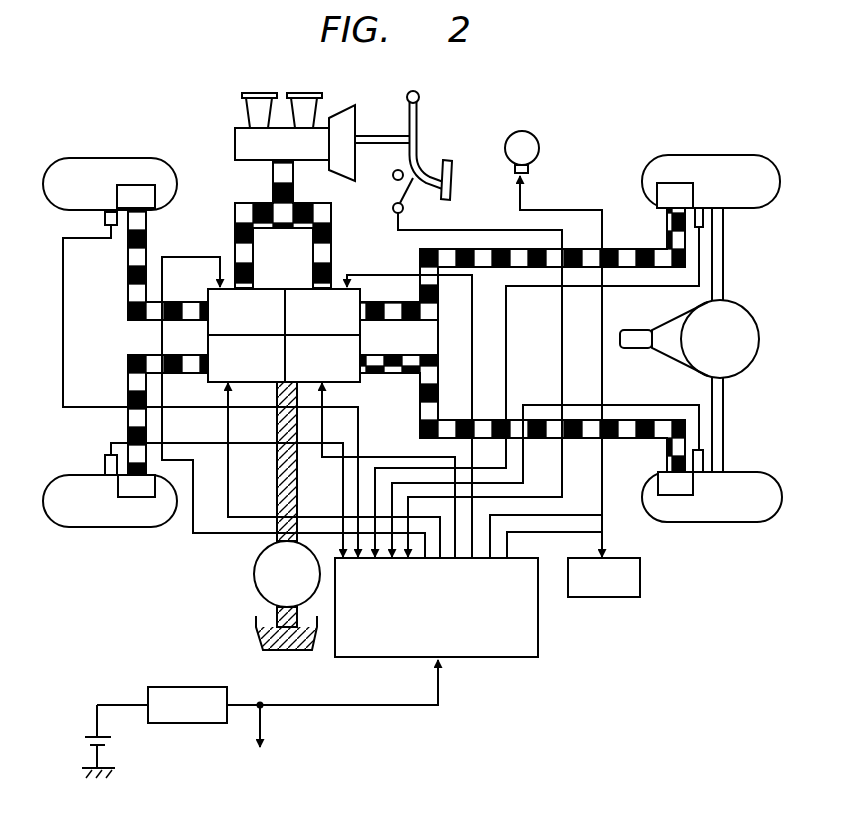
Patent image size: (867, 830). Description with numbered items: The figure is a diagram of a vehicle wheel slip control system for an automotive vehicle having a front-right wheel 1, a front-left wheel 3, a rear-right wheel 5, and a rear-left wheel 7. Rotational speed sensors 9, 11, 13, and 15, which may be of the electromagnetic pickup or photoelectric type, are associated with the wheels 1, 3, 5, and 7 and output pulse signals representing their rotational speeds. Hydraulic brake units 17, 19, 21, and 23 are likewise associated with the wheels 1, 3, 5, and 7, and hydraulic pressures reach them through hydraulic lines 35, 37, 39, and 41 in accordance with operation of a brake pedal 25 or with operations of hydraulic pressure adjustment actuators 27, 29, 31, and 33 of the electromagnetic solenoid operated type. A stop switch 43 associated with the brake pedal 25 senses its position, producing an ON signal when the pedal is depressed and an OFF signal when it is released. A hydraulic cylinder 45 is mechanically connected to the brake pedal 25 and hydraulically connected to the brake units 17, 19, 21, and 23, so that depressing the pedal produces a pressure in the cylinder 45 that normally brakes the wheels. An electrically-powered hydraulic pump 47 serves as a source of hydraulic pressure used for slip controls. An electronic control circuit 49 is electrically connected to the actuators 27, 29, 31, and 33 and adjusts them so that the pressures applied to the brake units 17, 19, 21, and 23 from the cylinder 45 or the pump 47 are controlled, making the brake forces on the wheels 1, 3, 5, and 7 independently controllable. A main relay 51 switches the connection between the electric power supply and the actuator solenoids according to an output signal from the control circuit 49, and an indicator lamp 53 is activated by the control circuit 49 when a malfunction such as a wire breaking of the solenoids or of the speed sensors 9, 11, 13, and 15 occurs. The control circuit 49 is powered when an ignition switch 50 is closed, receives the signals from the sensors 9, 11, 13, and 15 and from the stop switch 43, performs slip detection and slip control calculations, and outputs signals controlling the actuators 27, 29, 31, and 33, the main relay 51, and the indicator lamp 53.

The front-right wheel 1 is at (103, 158).
The front-left wheel 3 is at (93, 527).
The rear-right wheel 5 is at (736, 155).
The rear-left wheel 7 is at (735, 522).
The rotational speed sensor 9 is at (105, 218).
The rotational speed sensor 11 is at (105, 463).
The rotational speed sensor 13 is at (704, 218).
The rotational speed sensor 15 is at (704, 455).
The hydraulic brake unit 17 is at (138, 185).
The hydraulic brake unit 19 is at (133, 497).
The hydraulic brake unit 21 is at (672, 183).
The hydraulic brake unit 23 is at (677, 496).
The brake pedal 25 is at (424, 151).
The hydraulic pressure adjustment actuator 27 is at (246, 312).
The hydraulic pressure adjustment actuator 29 is at (246, 358).
The hydraulic pressure adjustment actuator 31 is at (322, 312).
The hydraulic pressure adjustment actuator 33 is at (322, 358).
The hydraulic line 35 is at (127, 285).
The hydraulic line 37 is at (127, 372).
The hydraulic line 39 is at (528, 268).
The hydraulic line 41 is at (487, 419).
The stop switch 43 is at (393, 192).
The hydraulic cylinder 45 is at (240, 128).
The hydraulic pump 47 is at (253, 575).
The electronic control circuit 49 is at (497, 658).
The ignition switch 50 is at (188, 687).
The main relay 51 is at (602, 598).
The indicator lamp 53 is at (540, 148).